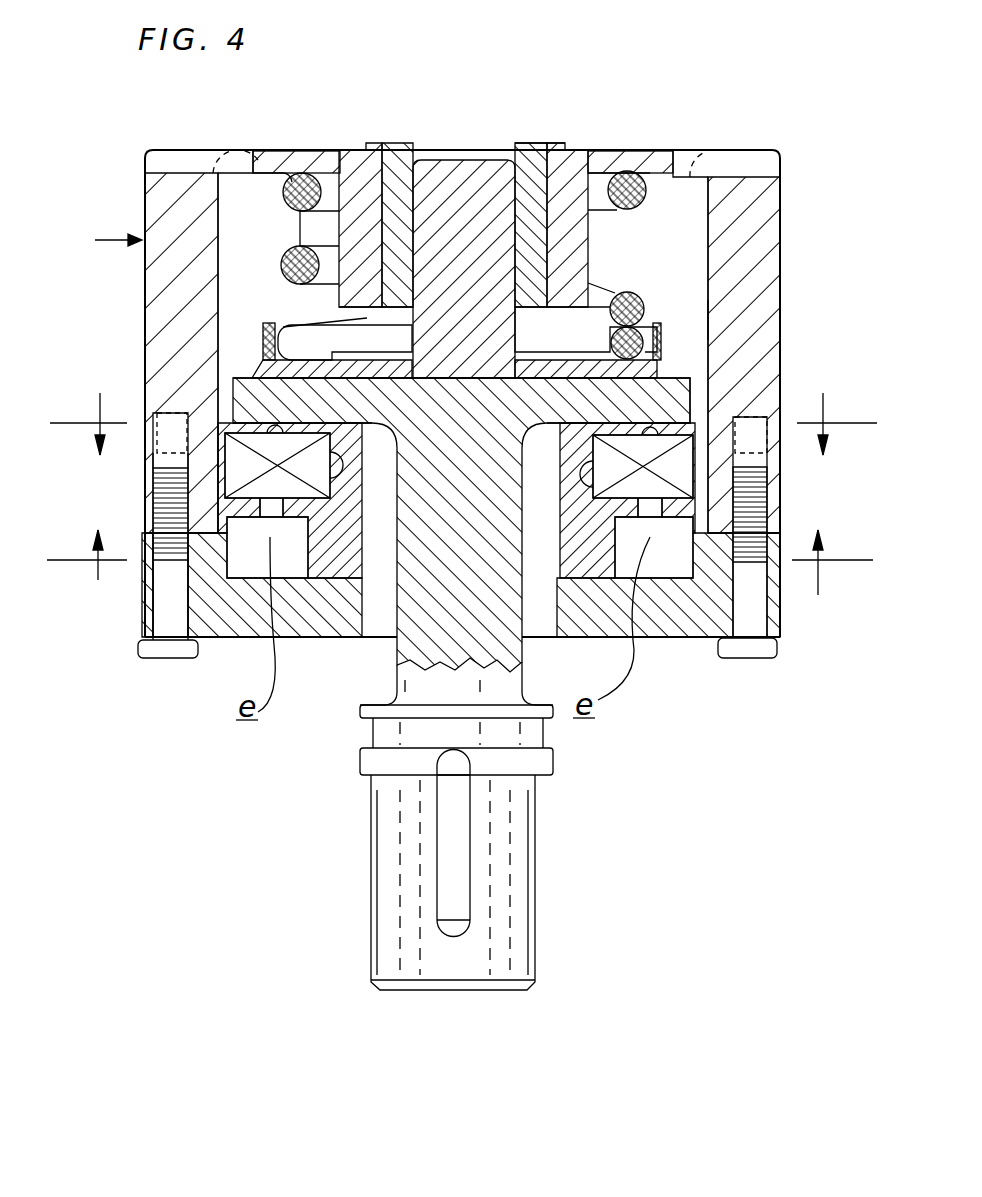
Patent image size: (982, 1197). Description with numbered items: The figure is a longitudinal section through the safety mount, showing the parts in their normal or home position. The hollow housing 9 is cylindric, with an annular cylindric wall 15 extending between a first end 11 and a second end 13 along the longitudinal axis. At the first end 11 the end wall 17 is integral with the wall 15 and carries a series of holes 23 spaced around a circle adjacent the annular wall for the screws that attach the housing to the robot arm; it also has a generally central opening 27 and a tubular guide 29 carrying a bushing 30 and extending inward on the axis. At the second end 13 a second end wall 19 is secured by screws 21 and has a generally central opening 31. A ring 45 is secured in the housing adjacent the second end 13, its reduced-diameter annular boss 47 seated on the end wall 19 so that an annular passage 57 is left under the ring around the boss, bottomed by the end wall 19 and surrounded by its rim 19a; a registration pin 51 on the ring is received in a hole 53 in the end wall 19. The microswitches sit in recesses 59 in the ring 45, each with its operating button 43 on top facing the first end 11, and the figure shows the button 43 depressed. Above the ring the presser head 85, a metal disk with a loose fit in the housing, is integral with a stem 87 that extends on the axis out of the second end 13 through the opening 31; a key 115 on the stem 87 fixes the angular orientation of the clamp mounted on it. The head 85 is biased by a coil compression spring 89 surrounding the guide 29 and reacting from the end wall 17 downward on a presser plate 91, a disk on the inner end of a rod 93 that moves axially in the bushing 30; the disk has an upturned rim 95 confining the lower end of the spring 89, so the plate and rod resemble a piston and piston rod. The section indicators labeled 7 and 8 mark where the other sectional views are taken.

The section line 7- 7 is at (463, 420).
The section line 8- 8 is at (460, 557).
The hollow housing 9 is at (102, 239).
The first end 11 is at (145, 152).
The second end 13 is at (140, 638).
The annular cylindric wall 15 is at (165, 272).
The end wall 17 is at (318, 160).
The end wall 19 is at (262, 640).
The rim 19a is at (140, 593).
The screws 21 is at (165, 663).
The holes 23 is at (230, 175).
The central opening 27 is at (550, 143).
The tubular guide 29 is at (590, 242).
The bushing 30 is at (540, 150).
The central opening 31 is at (525, 630).
The button 43 is at (233, 380).
The ring 45 is at (197, 480).
The annular boss 47 is at (378, 635).
The registration pin 51 is at (226, 455).
The hole 53 is at (697, 453).
The annular passage 57 is at (253, 553).
The recess 59 is at (330, 480).
The presser head 85 is at (712, 318).
The stem 87 is at (368, 900).
The coil compression spring 89 is at (288, 250).
The presser plate 91 is at (672, 362).
The rod 93 is at (455, 160).
The upturned rim 95 is at (290, 326).
The key 115 is at (467, 838).